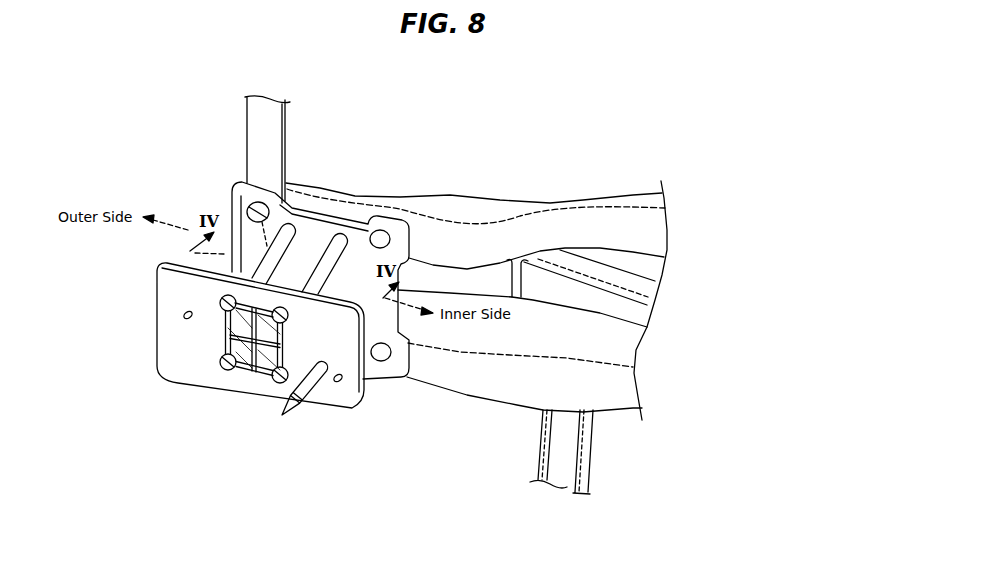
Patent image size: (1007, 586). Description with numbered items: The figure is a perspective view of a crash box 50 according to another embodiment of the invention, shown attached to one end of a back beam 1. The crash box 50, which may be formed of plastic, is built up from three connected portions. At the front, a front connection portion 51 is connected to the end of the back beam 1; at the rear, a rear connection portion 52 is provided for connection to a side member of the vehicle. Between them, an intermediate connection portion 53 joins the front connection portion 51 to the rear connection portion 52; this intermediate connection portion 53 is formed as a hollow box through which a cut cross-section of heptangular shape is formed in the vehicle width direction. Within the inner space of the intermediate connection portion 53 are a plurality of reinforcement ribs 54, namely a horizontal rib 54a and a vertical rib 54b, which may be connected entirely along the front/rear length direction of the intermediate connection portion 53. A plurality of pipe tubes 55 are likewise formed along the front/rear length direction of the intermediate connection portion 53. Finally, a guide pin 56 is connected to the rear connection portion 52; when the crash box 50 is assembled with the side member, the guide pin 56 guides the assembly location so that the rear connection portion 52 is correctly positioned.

The back beam 1 is at (552, 223).
The crash box 50 is at (222, 358).
The front connection portion 51 is at (346, 228).
The rear connection portion 52 is at (195, 381).
The intermediate connection portion 53 is at (308, 241).
The reinforcement ribs 54 is at (211, 425).
The horizontal rib 54a is at (236, 371).
The vertical rib 54b is at (255, 372).
The pipe tubes 55 is at (248, 206).
The guide pin 56 is at (322, 384).